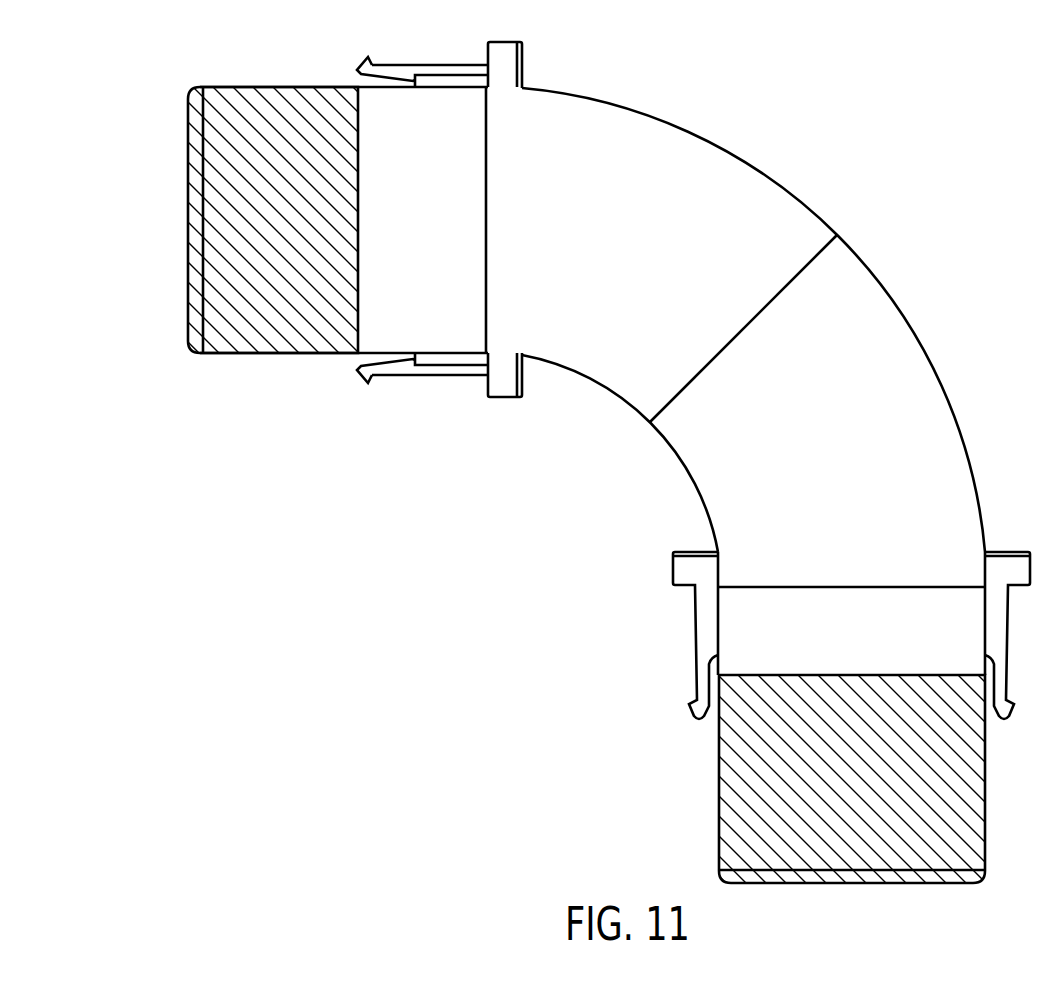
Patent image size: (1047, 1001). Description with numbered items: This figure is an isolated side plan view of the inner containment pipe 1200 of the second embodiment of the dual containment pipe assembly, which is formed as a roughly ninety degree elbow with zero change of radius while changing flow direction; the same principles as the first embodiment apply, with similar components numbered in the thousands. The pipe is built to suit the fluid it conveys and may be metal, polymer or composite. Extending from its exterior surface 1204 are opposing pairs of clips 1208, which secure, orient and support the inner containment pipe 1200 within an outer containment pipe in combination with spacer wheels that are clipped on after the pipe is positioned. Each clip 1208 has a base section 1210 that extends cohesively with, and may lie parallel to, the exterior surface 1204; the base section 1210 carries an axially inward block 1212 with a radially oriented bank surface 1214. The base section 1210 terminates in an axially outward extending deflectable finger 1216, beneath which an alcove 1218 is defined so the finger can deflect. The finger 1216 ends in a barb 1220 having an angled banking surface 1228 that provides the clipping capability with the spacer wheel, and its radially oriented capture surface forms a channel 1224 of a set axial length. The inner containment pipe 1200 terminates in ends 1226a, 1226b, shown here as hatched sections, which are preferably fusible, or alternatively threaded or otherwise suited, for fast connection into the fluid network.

The inner containment pipe 1200 is at (178, 701).
The exterior surface 1204 is at (700, 463).
The clips 1208 is at (675, 573).
The base section 1210 is at (460, 366).
The axially inward block 1212 is at (508, 63).
The bank surface 1214 is at (487, 58).
The deflectable finger 1216 is at (416, 366).
The alcove 1218 is at (336, 366).
The barb 1220 is at (356, 65).
The channel 1224 is at (669, 633).
The end 1226a is at (222, 345).
The end 1226b is at (730, 790).
The angled banking surface 1228 is at (363, 380).